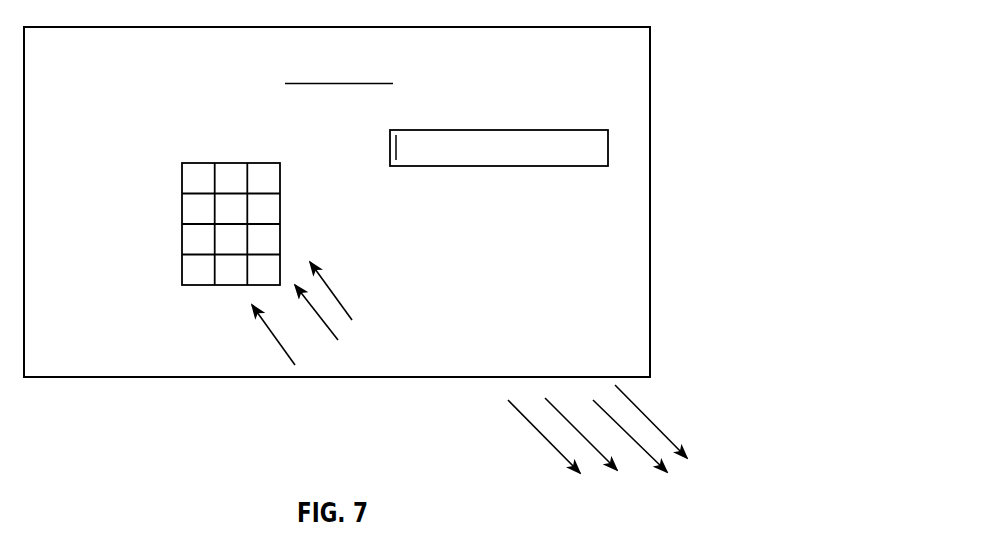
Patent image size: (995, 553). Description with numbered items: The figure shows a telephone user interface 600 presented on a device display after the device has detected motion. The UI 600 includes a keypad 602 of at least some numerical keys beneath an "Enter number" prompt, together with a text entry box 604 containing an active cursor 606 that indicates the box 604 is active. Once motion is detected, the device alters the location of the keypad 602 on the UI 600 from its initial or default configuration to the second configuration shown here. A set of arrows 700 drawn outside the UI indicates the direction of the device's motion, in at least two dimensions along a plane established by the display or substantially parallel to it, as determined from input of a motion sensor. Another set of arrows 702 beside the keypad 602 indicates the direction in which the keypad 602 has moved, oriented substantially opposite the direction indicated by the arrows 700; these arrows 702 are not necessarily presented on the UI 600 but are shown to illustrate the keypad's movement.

The user interface 600 is at (651, 74).
The keypad 602 is at (280, 209).
The text entry box 604 is at (608, 143).
The active cursor 606 is at (397, 137).
The arrows indicating direction of motion 700 is at (655, 408).
The arrows indicating direction of keypad movement 702 is at (338, 283).